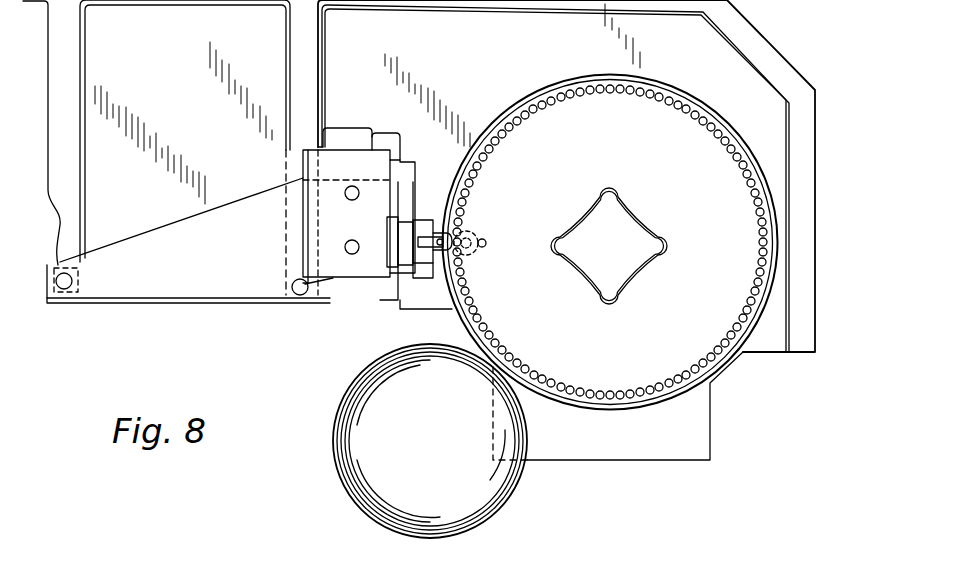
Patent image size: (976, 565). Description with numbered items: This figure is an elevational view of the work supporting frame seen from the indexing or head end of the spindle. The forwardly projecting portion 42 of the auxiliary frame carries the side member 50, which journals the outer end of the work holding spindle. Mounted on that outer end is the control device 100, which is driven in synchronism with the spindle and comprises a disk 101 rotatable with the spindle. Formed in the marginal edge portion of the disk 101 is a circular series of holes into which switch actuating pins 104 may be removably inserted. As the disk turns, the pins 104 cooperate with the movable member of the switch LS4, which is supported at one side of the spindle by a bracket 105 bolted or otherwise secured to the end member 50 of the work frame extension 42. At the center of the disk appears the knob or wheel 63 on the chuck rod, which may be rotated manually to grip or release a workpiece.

The side member 50 is at (103, 221).
The bracket 105 is at (222, 283).
The forwardly projecting portion 42 is at (353, 0).
The control device 100 is at (610, 239).
The disk 101 is at (640, 408).
The switch actuating pins 104 is at (487, 336).
The knob or wheel 63 is at (648, 260).
The switch LS4 is at (403, 310).